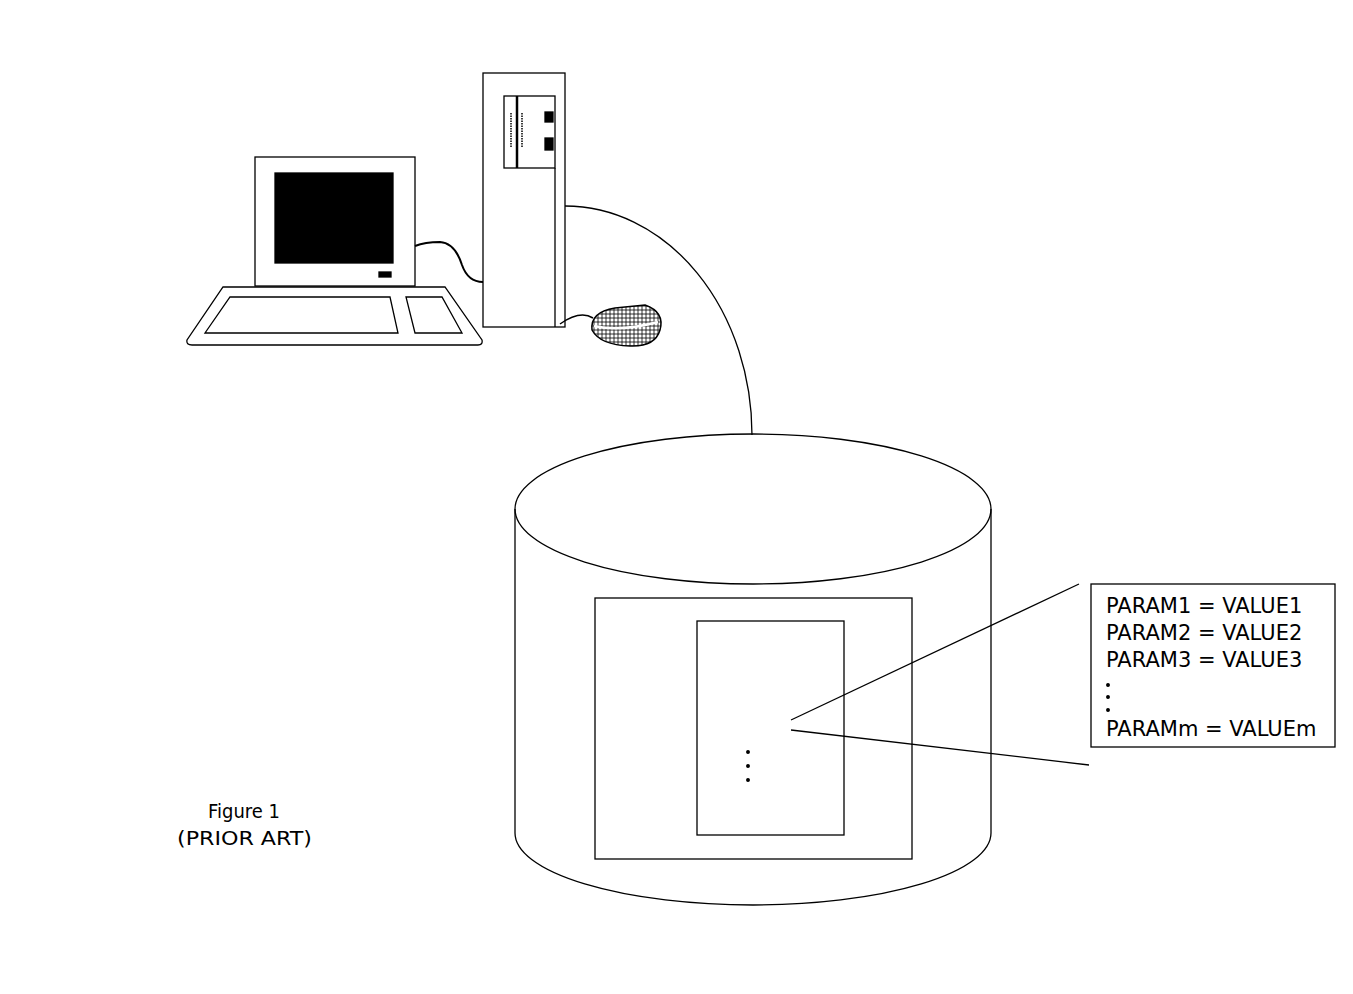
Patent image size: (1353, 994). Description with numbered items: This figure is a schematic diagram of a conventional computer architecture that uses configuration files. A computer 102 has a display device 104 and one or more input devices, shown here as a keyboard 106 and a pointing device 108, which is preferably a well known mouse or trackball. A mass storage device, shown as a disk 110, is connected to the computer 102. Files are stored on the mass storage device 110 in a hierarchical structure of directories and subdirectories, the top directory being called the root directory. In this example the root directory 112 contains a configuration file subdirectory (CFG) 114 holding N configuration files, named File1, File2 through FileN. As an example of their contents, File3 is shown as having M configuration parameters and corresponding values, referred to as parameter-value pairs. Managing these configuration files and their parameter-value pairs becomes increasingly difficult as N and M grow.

The computer 102 is at (504, 73).
The display device 104 is at (278, 155).
The keyboard 106 is at (208, 313).
The pointing device 108 is at (652, 312).
The disk 110 is at (539, 482).
The root directory 112 is at (595, 666).
The configuration file subdirectory (CFG) 114 is at (697, 779).